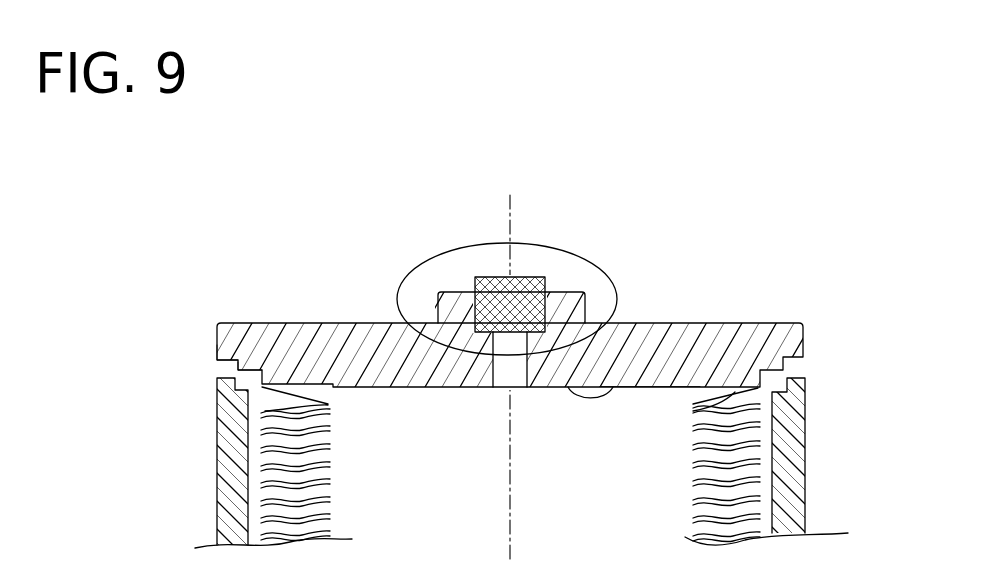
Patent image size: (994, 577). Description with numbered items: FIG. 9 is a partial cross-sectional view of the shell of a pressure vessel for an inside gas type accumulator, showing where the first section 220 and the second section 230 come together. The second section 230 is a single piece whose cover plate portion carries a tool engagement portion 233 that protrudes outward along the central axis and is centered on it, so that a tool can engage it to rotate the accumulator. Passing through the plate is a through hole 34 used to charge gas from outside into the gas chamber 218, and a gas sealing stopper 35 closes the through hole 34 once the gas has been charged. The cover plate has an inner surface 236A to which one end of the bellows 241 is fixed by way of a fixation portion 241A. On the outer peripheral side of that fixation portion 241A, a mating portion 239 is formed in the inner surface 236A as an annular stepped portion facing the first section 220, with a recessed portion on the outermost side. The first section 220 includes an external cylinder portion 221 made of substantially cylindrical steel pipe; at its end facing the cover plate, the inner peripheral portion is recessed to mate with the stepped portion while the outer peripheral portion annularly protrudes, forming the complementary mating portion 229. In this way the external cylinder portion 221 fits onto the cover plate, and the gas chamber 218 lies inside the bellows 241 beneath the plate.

The gas sealing stopper 35 is at (533, 277).
The tool engagement portion 233 is at (616, 304).
The inner surface 236A is at (647, 355).
The second section 230 is at (820, 313).
The first section 220 is at (505, 454).
The external cylinder portion 221 is at (790, 480).
The gas chamber 218 is at (377, 460).
The mating portion 239 is at (233, 361).
The mating portion 229 is at (230, 372).
The through hole 34 is at (518, 388).
The fixation portion 241A is at (693, 411).
The bellows 241 is at (693, 495).